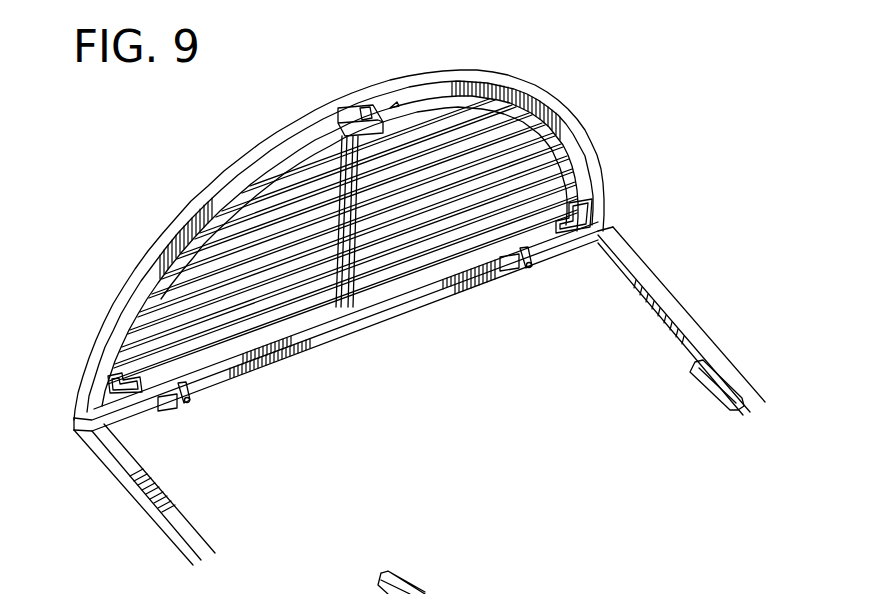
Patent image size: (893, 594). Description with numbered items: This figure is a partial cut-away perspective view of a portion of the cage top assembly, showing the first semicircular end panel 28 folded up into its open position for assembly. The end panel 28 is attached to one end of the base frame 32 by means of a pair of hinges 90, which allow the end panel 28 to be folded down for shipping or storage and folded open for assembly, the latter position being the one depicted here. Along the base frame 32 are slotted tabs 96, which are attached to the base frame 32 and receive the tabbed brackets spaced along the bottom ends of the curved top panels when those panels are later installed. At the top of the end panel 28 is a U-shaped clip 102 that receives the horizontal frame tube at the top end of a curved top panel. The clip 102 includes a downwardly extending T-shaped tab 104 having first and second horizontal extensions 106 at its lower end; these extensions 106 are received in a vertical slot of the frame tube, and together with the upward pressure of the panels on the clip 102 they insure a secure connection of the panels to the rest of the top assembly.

The first semicircular end panel 28 is at (194, 200).
The base frame 32 is at (143, 511).
The hinges 90 is at (190, 403).
The slotted tabs 96 is at (697, 374).
The U-shaped clip 102 is at (346, 105).
The T-shaped tab 104 is at (364, 106).
The horizontal extensions 106 is at (394, 106).